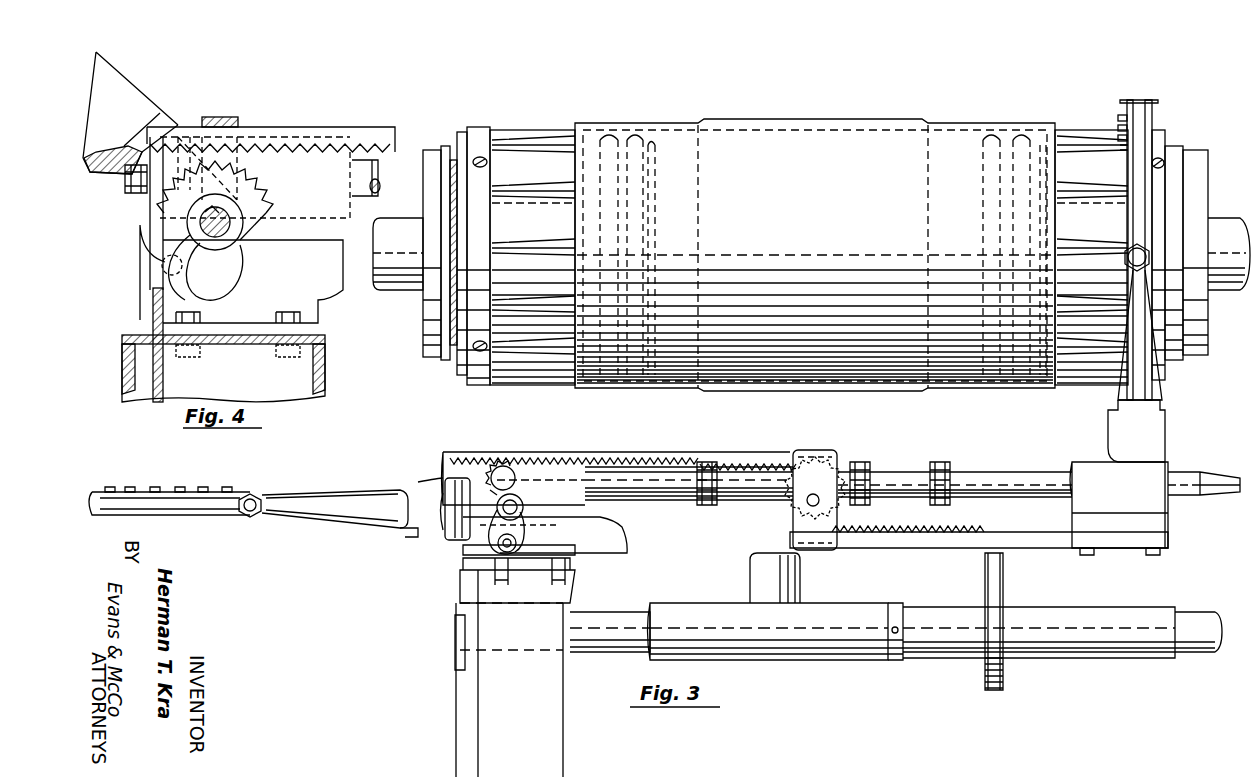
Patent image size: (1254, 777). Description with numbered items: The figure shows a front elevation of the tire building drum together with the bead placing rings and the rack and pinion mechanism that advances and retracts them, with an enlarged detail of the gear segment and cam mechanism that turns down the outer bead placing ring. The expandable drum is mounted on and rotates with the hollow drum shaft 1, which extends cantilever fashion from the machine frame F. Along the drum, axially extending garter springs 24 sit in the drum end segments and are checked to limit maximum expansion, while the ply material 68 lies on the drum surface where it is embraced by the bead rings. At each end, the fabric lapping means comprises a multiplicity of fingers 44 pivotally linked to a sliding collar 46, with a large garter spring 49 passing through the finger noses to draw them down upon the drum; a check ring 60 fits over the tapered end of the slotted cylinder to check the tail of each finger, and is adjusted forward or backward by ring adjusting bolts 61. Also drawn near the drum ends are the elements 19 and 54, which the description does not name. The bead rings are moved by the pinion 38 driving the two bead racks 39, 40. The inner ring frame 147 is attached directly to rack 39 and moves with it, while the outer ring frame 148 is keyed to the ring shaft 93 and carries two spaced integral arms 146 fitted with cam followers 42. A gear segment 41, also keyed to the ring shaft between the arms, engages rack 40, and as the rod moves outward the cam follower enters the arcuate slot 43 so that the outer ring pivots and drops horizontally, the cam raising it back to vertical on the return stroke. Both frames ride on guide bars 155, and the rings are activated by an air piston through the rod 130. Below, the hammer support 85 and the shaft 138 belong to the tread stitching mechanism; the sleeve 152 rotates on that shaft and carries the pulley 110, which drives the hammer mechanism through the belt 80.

In FIG. 3, the drum shaft 1 is at (405, 282).
In FIG. 3, the bearing 19 is at (470, 295).
In FIG. 3, the garter springs 24 is at (652, 135).
In FIG. 3, the pinion 38 is at (790, 510).
In FIG. 3, the bead rack 39 is at (1040, 548).
In FIG. 4, the bead rack 40 is at (352, 127).
In FIG. 3, the bead rack 40 is at (645, 452).
In FIG. 4, the gear segment 41 is at (278, 172).
In FIG. 3, the gear segment 41 is at (518, 467).
In FIG. 4, the cam followers 42 is at (150, 258).
In FIG. 3, the cam followers 42 is at (517, 545).
In FIG. 4, the arcuate slot 43 is at (135, 222).
In FIG. 3, the arcuate slot 43 is at (470, 545).
In FIG. 3, the fingers 44 is at (560, 134).
In FIG. 3, the sliding collar 46 is at (432, 150).
In FIG. 3, the garter spring 49 is at (612, 132).
In FIG. 3, the ring 54 is at (446, 146).
In FIG. 3, the check ring 60 is at (478, 127).
In FIG. 3, the ring adjusting bolts 61 is at (478, 352).
In FIG. 3, the ply material 68 is at (780, 119).
In FIG. 3, the belt 80 is at (985, 680).
In FIG. 3, the hammer support 85 is at (750, 572).
In FIG. 4, the ring shaft 93 is at (228, 238).
In FIG. 3, the ring shaft 93 is at (523, 497).
In FIG. 3, the pulley 110 is at (1003, 687).
In FIG. 3, the rod 130 is at (1212, 478).
In FIG. 3, the shaft 138 is at (940, 618).
In FIG. 4, the integral arms 146 is at (215, 262).
In FIG. 3, the integral arms 146 is at (530, 523).
In FIG. 3, the ring frame 147 is at (1165, 425).
In FIG. 4, the ring frame 148 is at (152, 103).
In FIG. 3, the ring frame 148 is at (420, 482).
In FIG. 3, the sleeve 152 is at (1122, 658).
In FIG. 3, the guide bars 155 is at (982, 471).
In FIG. 3, the machine frame F is at (456, 685).